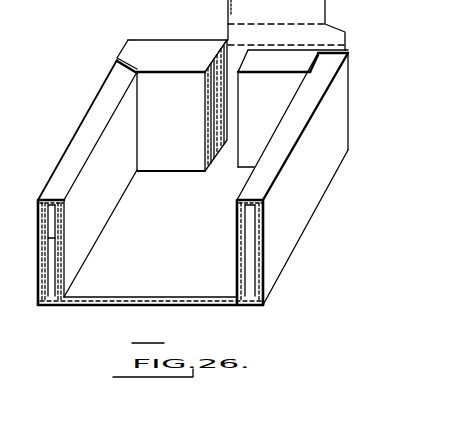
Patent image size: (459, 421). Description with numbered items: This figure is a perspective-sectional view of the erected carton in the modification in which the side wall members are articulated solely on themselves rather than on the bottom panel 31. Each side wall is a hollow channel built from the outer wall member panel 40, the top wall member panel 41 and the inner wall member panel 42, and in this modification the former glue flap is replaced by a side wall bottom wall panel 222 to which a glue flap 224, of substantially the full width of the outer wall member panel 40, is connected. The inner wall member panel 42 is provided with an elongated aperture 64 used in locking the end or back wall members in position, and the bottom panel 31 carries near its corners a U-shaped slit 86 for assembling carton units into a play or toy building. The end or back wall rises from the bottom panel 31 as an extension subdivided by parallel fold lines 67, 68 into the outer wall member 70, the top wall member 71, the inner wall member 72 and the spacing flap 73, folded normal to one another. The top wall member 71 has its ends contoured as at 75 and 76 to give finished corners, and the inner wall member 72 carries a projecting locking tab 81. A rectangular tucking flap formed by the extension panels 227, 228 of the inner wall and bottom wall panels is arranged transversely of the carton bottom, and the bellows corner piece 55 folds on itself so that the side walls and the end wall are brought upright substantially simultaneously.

The bottom panel 31 is at (162, 300).
The side wall outer wall member panel 40 is at (37, 275).
The side wall top wall member panel 41 is at (80, 146).
The side wall inner wall member panel 42 is at (87, 241).
The corner piece 55 is at (347, 50).
The elongated aperture 64 is at (137, 170).
The score or fold line 67 is at (270, 29).
The score or fold line 68 is at (268, 24).
The end or back wall outer wall member 70 is at (233, 98).
The end or back wall top wall member 71 is at (282, 31).
The end or back wall inner wall member 72 is at (186, 172).
The spacing flap 73 is at (205, 132).
The contour 75 is at (133, 64).
The contour 76 is at (343, 28).
The locking tab 81 is at (137, 157).
The U-shaped slit 86 is at (128, 188).
The side wall bottom wall panel 222 is at (63, 298).
The glue flap 224 is at (289, 279).
The extension panel 227 is at (272, 68).
The extension panel 228 is at (256, 88).